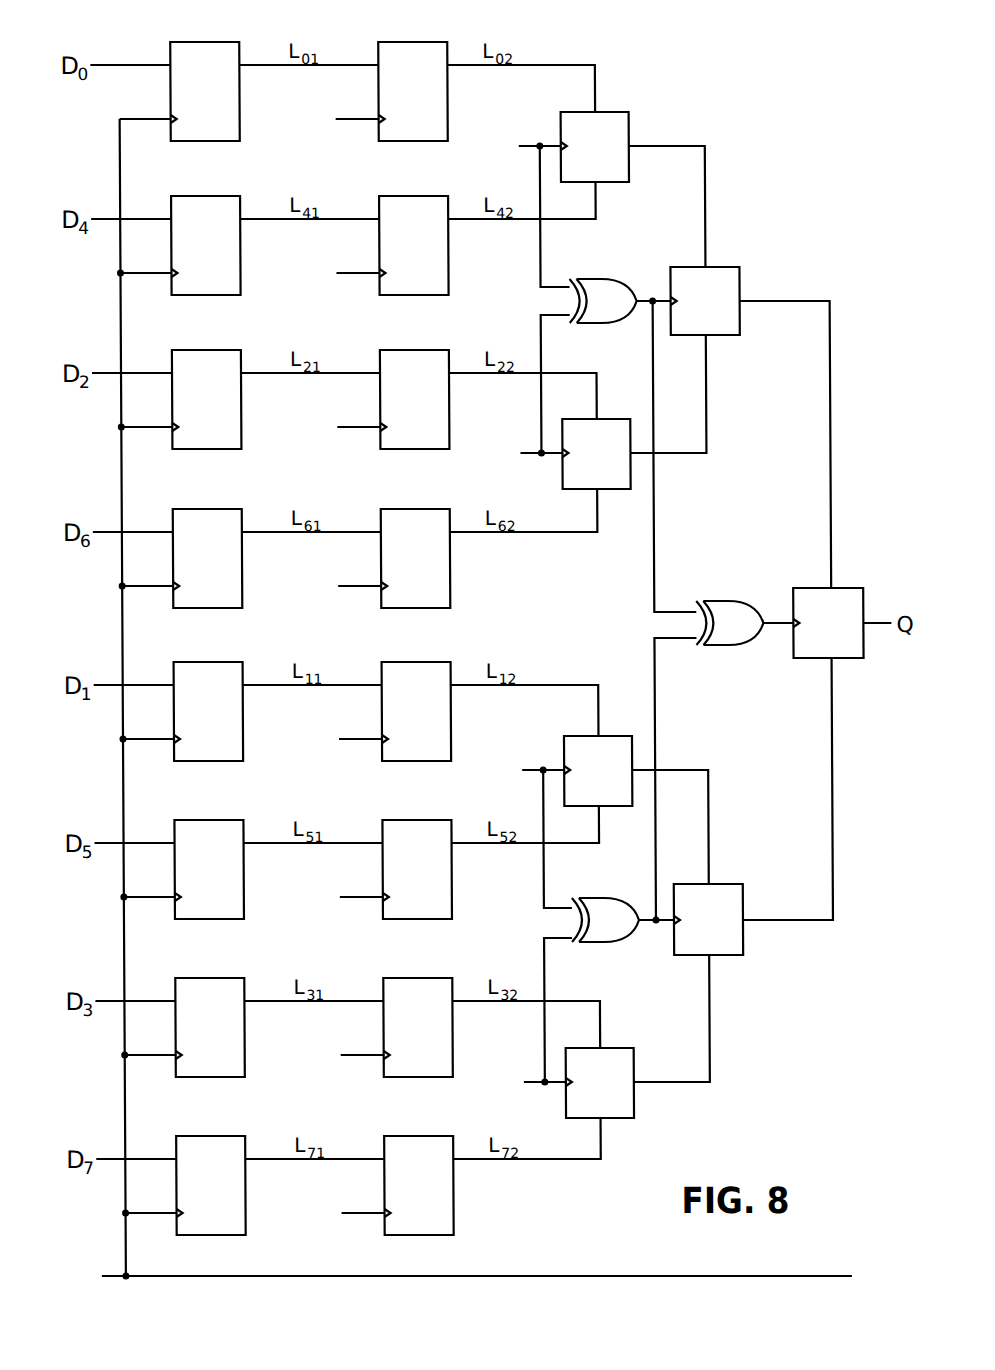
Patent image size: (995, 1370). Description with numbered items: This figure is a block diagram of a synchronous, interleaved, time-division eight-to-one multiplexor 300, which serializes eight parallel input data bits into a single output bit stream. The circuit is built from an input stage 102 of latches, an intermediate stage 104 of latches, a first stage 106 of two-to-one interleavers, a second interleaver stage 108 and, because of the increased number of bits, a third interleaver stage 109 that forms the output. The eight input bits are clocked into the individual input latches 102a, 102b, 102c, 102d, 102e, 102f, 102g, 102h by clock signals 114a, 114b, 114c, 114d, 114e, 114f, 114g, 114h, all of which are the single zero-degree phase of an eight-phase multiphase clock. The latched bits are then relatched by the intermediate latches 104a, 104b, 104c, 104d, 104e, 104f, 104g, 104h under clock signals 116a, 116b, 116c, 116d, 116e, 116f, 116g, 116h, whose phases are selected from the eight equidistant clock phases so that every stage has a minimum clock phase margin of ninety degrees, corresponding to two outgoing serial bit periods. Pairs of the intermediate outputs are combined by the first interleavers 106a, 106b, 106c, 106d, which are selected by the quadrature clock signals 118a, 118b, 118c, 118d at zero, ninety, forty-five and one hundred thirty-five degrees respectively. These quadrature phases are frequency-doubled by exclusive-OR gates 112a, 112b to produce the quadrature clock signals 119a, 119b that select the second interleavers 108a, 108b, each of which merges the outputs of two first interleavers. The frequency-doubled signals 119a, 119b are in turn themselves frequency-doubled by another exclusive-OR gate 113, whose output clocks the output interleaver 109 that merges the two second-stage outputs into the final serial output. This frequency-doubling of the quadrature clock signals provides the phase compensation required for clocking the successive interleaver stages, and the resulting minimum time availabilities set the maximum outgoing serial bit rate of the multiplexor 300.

The input stage of latches 102 is at (242, 46).
The input latch 102a is at (197, 139).
The input latch 102b is at (197, 759).
The input latch 102c is at (197, 447).
The input latch 102d is at (197, 1075).
The input latch 102e is at (197, 293).
The input latch 102f is at (197, 917).
The input latch 102g is at (197, 606).
The input latch 102h is at (197, 1233).
The intermediate stage of latches 104 is at (453, 47).
The intermediate latch 104a is at (404, 141).
The intermediate latch 104b is at (404, 761).
The intermediate latch 104c is at (404, 449).
The intermediate latch 104d is at (404, 1077).
The intermediate latch 104e is at (404, 295).
The intermediate latch 104f is at (404, 919).
The intermediate latch 104g is at (404, 608).
The intermediate latch 104h is at (404, 1235).
The first stage of interleavers 106 is at (619, 93).
The first interleaver 106a is at (603, 182).
The first interleaver 106b is at (614, 491).
The first interleaver 106c is at (625, 735).
The first interleaver 106d is at (625, 1053).
The second interleaver stage 108 is at (745, 232).
The second interleaver 108a is at (727, 335).
The second interleaver 108b is at (742, 955).
The third interleaver stage 109 is at (842, 582).
The exclusive-OR gate 112a is at (601, 280).
The exclusive-OR gate 112b is at (606, 908).
The exclusive-OR gate 113 is at (707, 605).
The clock signal 114a is at (142, 121).
The clock signal 114b is at (142, 741).
The clock signal 114c is at (142, 429).
The clock signal 114d is at (142, 1057).
The clock signal 114e is at (142, 275).
The clock signal 114f is at (142, 899).
The clock signal 114g is at (142, 588).
The clock signal 114h is at (142, 1215).
The clock signal 116a is at (352, 119).
The clock signal 116b is at (352, 739).
The clock signal 116c is at (352, 427).
The clock signal 116d is at (352, 1055).
The clock signal 116e is at (352, 273).
The clock signal 116f is at (352, 897).
The clock signal 116g is at (352, 586).
The clock signal 116h is at (352, 1213).
The clock signal 118a is at (532, 143).
The clock signal 118b is at (528, 457).
The clock signal 118c is at (545, 763).
The clock signal 118d is at (539, 1088).
The frequency-doubled clock signal 119a is at (651, 510).
The frequency-doubled clock signal 119b is at (651, 741).
The interleaved time-division 8:1 multiplexor 300 is at (788, 1125).